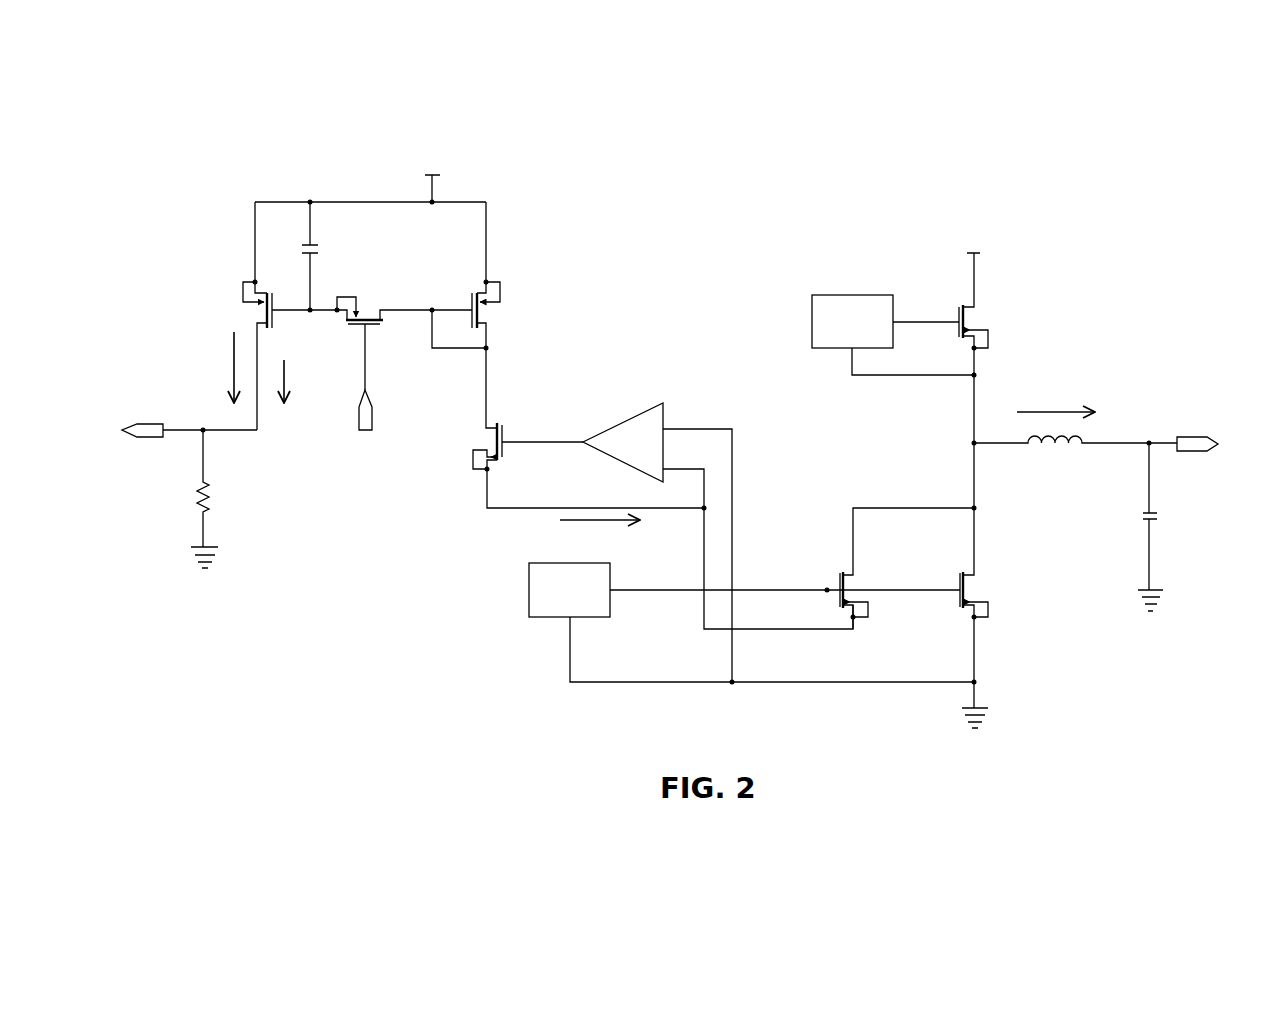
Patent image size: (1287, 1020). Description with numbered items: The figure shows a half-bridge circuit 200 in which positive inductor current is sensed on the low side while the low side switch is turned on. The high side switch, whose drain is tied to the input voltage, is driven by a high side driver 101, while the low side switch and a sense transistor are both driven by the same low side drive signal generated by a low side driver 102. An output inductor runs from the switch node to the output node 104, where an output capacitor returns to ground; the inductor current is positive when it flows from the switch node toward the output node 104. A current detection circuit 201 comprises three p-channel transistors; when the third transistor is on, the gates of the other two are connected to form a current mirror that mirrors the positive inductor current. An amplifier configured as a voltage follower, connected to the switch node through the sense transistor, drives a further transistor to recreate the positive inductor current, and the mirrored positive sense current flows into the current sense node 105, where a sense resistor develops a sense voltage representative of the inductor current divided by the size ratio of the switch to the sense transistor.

The half-bridge circuit 200 is at (226, 166).
The current detection circuit 201 is at (516, 248).
The high side driver 101 is at (812, 322).
The low side driver 102 is at (529, 593).
The output node 104 is at (1197, 437).
The current sense node 105 is at (140, 424).